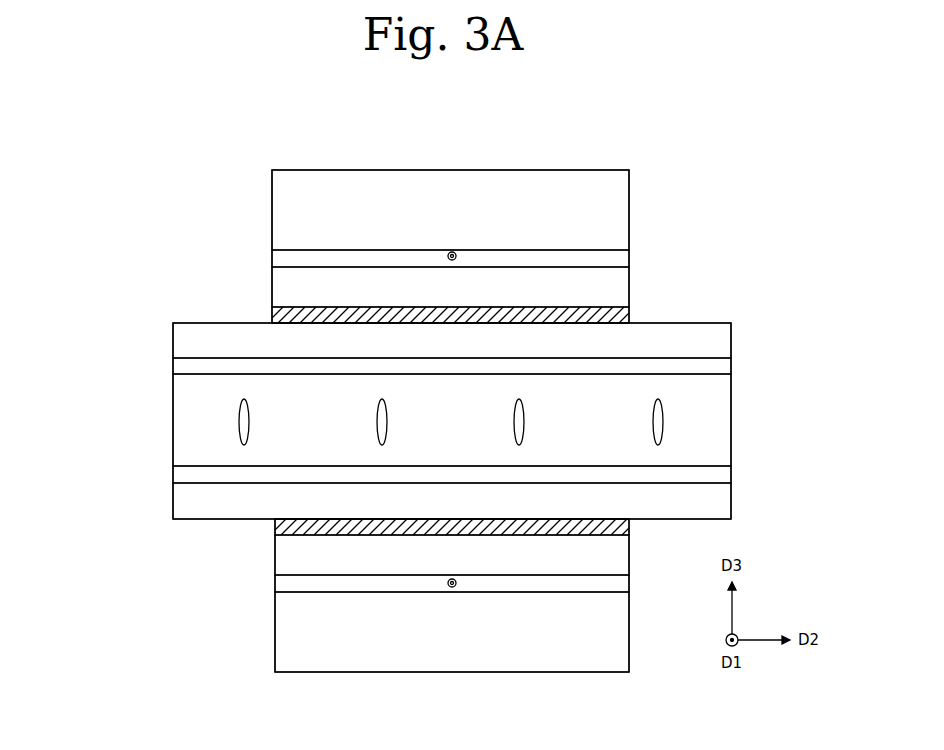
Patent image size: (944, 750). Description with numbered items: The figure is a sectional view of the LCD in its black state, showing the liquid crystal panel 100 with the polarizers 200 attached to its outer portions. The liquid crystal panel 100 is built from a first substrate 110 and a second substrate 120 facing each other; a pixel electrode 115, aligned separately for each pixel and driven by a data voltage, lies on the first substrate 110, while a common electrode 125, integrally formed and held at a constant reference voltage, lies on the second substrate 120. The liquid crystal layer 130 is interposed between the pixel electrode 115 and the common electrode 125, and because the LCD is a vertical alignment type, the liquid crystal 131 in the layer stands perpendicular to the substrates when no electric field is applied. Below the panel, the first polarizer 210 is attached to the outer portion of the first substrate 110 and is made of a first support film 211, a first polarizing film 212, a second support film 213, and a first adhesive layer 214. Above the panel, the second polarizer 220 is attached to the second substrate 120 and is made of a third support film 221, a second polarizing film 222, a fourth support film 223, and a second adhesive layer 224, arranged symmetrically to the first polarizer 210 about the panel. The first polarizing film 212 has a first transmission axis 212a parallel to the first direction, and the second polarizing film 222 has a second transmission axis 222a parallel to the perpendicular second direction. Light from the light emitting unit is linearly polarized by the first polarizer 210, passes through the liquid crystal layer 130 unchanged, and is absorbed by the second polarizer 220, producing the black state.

The liquid crystal panel 100 is at (819, 322).
The first substrate 110 is at (718, 499).
The pixel electrode 115 is at (718, 472).
The second substrate 120 is at (718, 334).
The common electrode 125 is at (718, 364).
The liquid crystal layer 130 is at (718, 420).
The liquid crystal 131 is at (250, 418).
The polarizers 200 is at (97, 250).
The first polarizer 210 is at (169, 532).
The first support film 211 is at (286, 630).
The first polarizing film 212 is at (286, 583).
The first transmission axis 212a is at (452, 588).
The second support film 213 is at (286, 558).
The first adhesive layer 214 is at (286, 527).
The second polarizer 220 is at (163, 203).
The third support film 221 is at (283, 218).
The second polarizing film 222 is at (283, 258).
The second transmission axis 222a is at (452, 252).
The fourth support film 223 is at (283, 286).
The second adhesive layer 224 is at (283, 313).